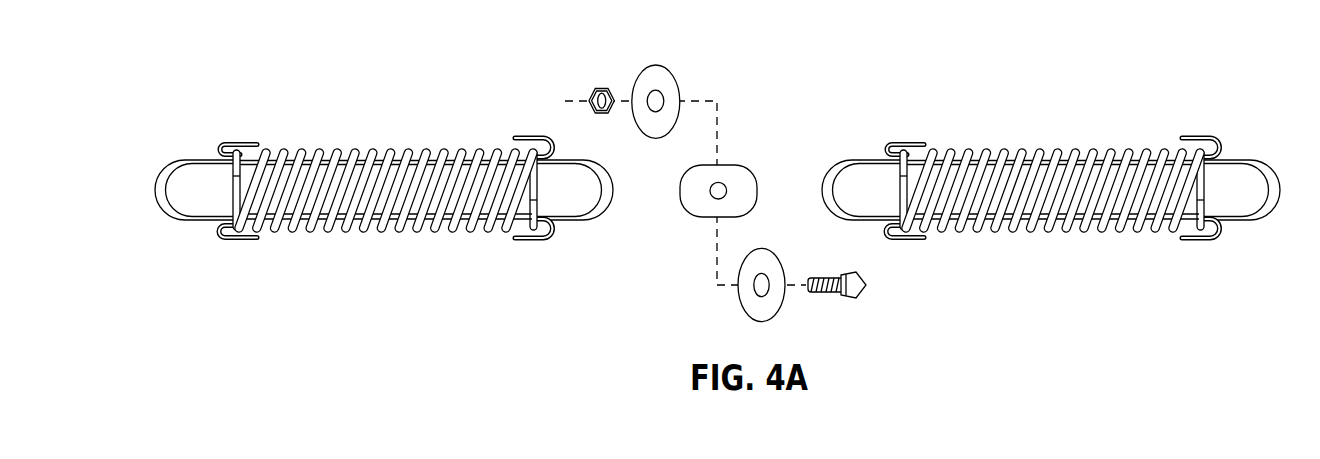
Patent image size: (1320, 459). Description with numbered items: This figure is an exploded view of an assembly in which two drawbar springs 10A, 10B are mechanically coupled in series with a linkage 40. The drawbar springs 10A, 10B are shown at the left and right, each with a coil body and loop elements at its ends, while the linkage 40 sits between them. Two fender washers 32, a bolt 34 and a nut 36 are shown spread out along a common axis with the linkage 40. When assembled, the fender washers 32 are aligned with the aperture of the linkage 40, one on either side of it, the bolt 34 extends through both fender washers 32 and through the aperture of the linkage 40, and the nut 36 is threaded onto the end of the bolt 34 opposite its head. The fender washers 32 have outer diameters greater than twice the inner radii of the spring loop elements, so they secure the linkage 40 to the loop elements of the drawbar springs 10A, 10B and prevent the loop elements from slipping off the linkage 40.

The drawbar spring 10A is at (245, 121).
The drawbar spring 10B is at (1203, 120).
The fender washer 32 is at (665, 73).
The bolt 34 is at (856, 295).
The nut 36 is at (603, 88).
The linkage 40 is at (740, 184).